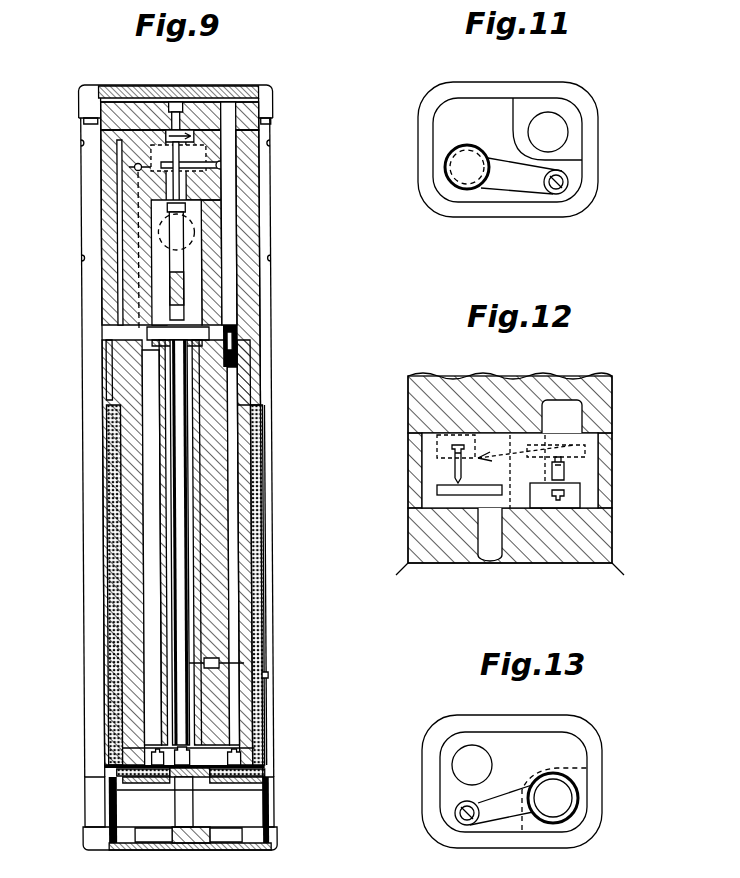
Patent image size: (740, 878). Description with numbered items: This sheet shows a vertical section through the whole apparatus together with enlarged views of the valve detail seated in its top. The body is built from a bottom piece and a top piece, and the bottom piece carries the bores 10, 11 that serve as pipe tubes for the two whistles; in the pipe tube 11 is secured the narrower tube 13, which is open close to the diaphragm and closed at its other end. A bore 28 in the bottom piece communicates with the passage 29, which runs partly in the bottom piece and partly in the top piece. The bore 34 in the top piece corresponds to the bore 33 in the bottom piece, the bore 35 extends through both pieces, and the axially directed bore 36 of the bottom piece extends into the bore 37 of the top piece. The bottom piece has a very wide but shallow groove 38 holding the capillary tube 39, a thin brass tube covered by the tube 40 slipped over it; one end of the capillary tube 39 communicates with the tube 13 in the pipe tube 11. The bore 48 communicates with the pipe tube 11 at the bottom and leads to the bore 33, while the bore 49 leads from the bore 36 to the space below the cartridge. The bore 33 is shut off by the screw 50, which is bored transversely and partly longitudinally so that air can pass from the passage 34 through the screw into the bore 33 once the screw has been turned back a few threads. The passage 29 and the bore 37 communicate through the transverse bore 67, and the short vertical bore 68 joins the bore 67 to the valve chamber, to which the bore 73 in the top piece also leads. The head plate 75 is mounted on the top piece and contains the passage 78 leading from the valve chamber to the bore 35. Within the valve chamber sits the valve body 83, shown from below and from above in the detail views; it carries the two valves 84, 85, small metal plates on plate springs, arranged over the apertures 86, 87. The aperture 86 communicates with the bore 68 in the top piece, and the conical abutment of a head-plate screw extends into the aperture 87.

In FIG. 9, the head plate 75 is at (262, 104).
In FIG. 9, the passage 78 is at (176, 128).
In FIG. 12, the passage 78 is at (572, 413).
In FIG. 9, the valve 84 is at (186, 135).
In FIG. 12, the valve 84 is at (480, 458).
In FIG. 13, the valve 84 is at (557, 800).
In FIG. 9, the transverse bore 67 is at (134, 166).
In FIG. 9, the short vertical bore 68 is at (217, 158).
In FIG. 9, the bore 35 is at (117, 210).
In FIG. 9, the passage 29 is at (222, 212).
In FIG. 9, the bore 34 is at (231, 237).
In FIG. 9, the bore 37 is at (138, 278).
In FIG. 9, the screw 50 is at (243, 347).
In FIG. 9, the bore 28 is at (197, 397).
In FIG. 9, the groove 38 is at (243, 468).
In FIG. 9, the axially directed bore 36 is at (148, 498).
In FIG. 9, the bore 33 is at (230, 497).
In FIG. 9, the narrower tube 13 is at (177, 556).
In FIG. 9, the capillary tube 39 is at (243, 583).
In FIG. 9, the bore 11 is at (166, 612).
In FIG. 9, the bore 48 is at (204, 663).
In FIG. 9, the tube 40 is at (263, 675).
In FIG. 9, the bore 49 is at (145, 747).
In FIG. 9, the bore 10 is at (105, 748).
In FIG. 11, the aperture 86 is at (553, 145).
In FIG. 11, the valve 85 is at (457, 170).
In FIG. 12, the valve 85 is at (445, 490).
In FIG. 11, the valve body 83 is at (567, 200).
In FIG. 12, the valve body 83 is at (592, 490).
In FIG. 13, the valve body 83 is at (595, 753).
In FIG. 12, the bore 73 is at (487, 552).
In FIG. 13, the aperture 87 is at (460, 753).